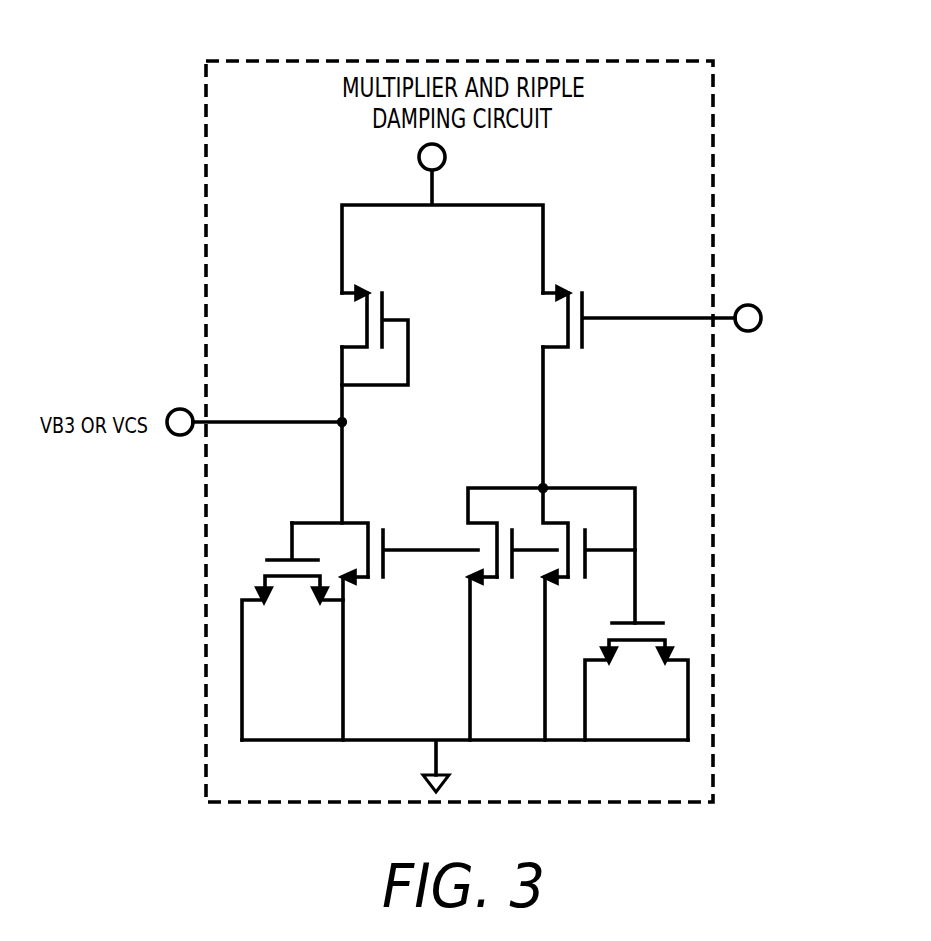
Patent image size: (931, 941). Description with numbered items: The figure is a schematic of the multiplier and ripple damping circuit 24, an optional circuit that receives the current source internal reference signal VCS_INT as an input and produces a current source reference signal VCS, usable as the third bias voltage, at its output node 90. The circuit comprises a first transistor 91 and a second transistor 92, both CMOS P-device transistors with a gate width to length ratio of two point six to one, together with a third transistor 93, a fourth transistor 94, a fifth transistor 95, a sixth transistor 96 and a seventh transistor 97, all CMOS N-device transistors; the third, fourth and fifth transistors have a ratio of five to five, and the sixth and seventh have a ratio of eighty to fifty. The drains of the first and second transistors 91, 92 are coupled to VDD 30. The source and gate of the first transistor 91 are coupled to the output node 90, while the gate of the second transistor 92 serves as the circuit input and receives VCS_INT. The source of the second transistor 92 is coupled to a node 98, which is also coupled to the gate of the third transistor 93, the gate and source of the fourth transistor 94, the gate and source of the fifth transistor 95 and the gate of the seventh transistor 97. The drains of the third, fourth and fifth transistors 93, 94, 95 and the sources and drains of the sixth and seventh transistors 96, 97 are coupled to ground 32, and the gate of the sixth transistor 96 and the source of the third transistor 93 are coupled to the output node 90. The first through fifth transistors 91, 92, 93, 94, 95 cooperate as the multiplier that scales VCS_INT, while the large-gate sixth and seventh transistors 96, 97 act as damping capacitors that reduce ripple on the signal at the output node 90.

The multiplier and ripple damping circuit 24 is at (715, 705).
The VDD 30 is at (446, 153).
The ground 32 is at (446, 777).
The output node 90 is at (348, 424).
The first transistor 91 is at (382, 308).
The second transistor 92 is at (586, 305).
The third transistor 93 is at (388, 530).
The fourth transistor 94 is at (513, 567).
The fifth transistor 95 is at (586, 567).
The sixth transistor 96 is at (277, 557).
The seventh transistor 97 is at (650, 622).
The node 98 is at (546, 482).